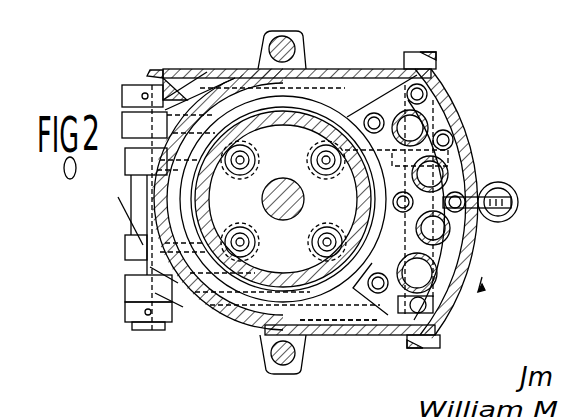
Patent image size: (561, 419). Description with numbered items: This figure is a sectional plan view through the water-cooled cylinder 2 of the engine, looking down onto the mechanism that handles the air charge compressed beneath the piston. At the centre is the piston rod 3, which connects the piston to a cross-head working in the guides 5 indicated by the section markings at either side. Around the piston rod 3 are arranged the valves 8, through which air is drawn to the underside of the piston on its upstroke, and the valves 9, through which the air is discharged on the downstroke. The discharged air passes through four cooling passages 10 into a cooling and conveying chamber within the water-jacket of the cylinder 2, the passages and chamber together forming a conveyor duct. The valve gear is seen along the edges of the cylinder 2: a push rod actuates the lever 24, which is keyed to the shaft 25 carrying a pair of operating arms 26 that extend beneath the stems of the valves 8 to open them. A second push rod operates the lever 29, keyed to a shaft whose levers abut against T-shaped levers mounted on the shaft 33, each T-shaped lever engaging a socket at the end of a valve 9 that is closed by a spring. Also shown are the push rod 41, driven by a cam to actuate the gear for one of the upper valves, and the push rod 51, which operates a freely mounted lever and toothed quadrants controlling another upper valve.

The cylinder 2 is at (305, 128).
The piston rod 3 is at (280, 188).
The guides 5 is at (147, 67).
The valves 8 is at (237, 223).
The valves 9 is at (330, 230).
The cooling passages 10 is at (418, 128).
The lever 24 is at (181, 88).
The shaft 25 is at (132, 265).
The operating arms 26 is at (147, 168).
The lever 29 is at (377, 322).
The shaft 33 is at (440, 335).
The push rod 41 is at (287, 374).
The push rod 51 is at (293, 42).